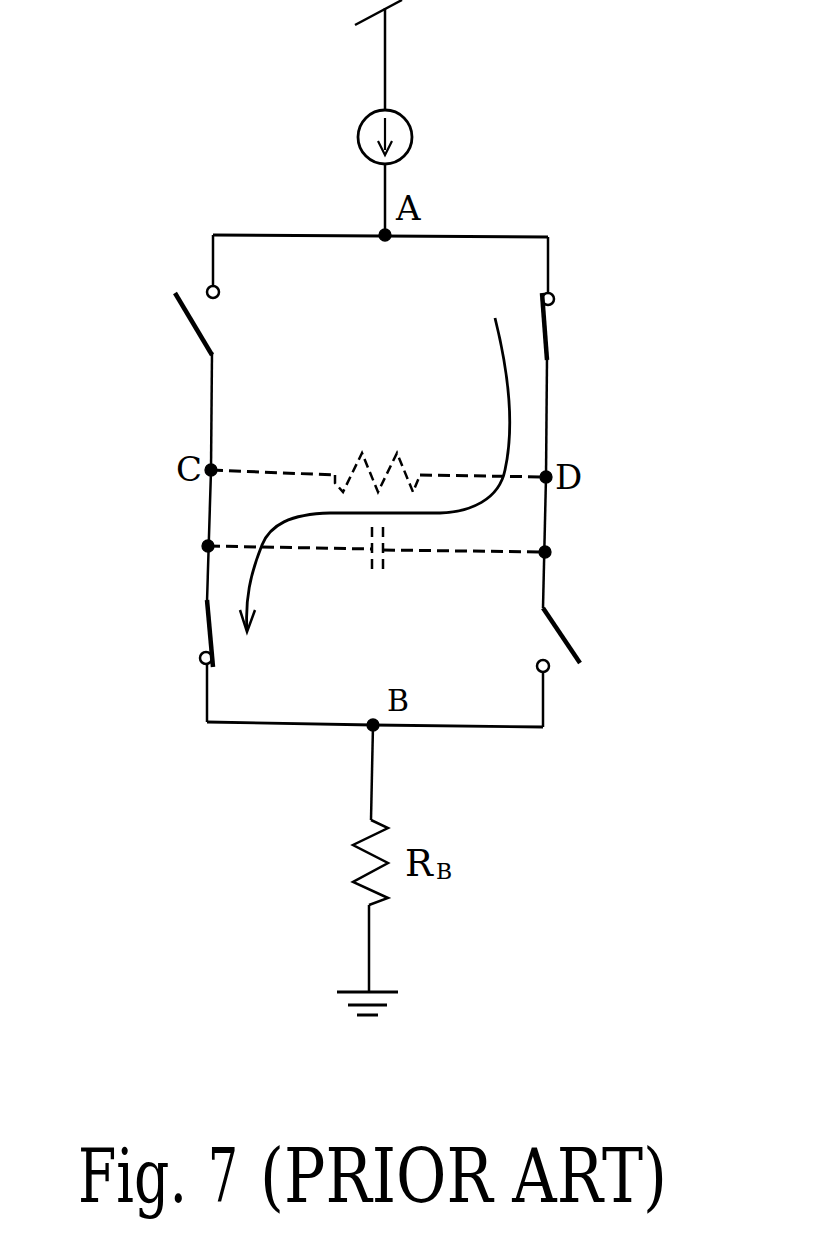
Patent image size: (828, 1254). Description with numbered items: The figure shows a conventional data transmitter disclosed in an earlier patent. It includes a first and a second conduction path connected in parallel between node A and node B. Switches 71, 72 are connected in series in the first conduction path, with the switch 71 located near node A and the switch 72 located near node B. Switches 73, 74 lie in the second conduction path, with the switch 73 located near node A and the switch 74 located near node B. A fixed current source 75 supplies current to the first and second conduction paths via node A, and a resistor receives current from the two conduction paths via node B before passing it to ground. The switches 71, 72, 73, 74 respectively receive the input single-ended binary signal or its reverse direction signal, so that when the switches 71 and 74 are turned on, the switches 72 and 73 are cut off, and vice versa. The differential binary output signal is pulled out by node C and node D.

The switch 71 is at (546, 326).
The switch 72 is at (563, 628).
The switch 73 is at (193, 330).
The switch 74 is at (208, 632).
The fixed current source 75 is at (407, 115).